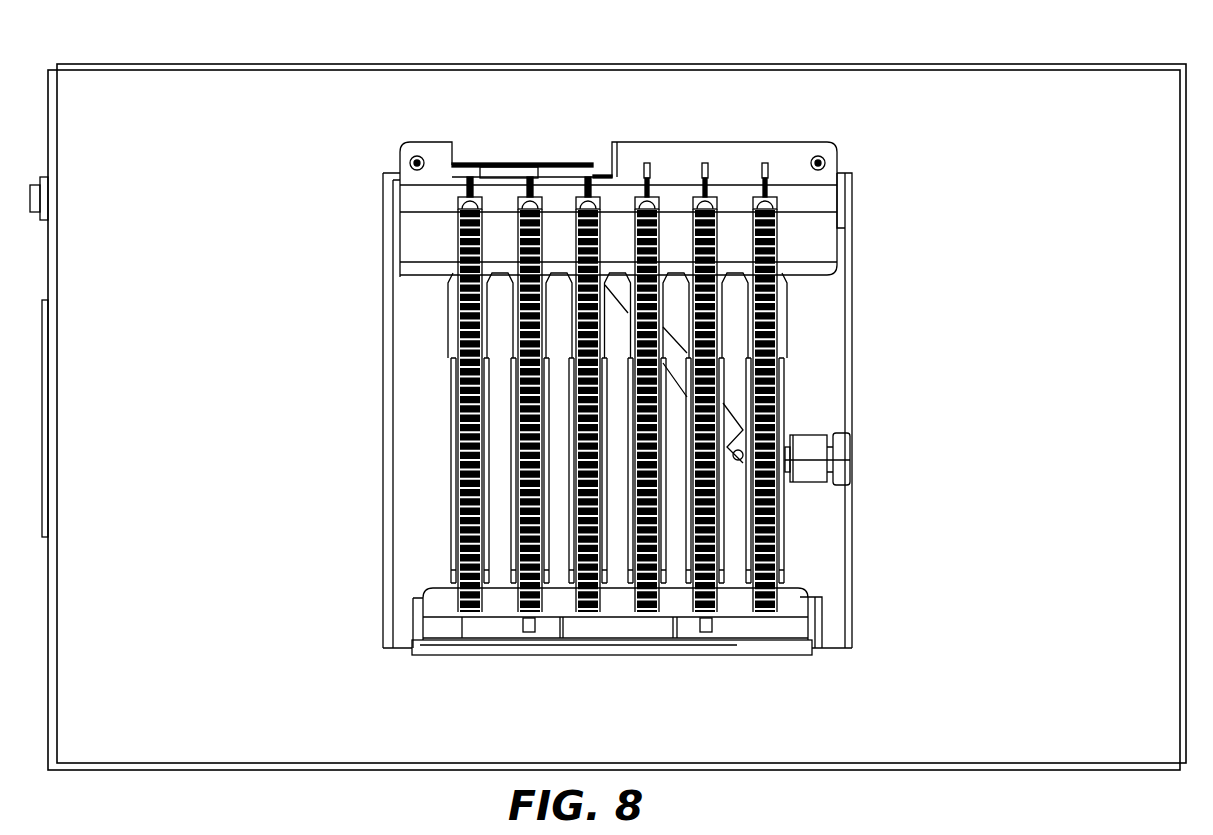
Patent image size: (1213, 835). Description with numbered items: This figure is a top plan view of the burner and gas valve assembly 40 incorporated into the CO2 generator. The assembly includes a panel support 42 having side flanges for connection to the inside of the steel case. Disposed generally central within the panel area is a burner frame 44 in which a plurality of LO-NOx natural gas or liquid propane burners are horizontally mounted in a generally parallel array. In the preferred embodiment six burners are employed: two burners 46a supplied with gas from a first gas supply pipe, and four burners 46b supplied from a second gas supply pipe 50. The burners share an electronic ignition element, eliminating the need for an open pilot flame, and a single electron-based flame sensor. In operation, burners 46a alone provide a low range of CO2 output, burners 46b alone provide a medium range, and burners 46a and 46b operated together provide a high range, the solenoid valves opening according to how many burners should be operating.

The burner and gas valve assembly 40 is at (1127, 50).
The panel support 42 is at (585, 60).
The burner frame 44 is at (733, 156).
The burners 46a is at (720, 577).
The burners 46b is at (520, 578).
The second gas supply pipe 50 is at (803, 473).